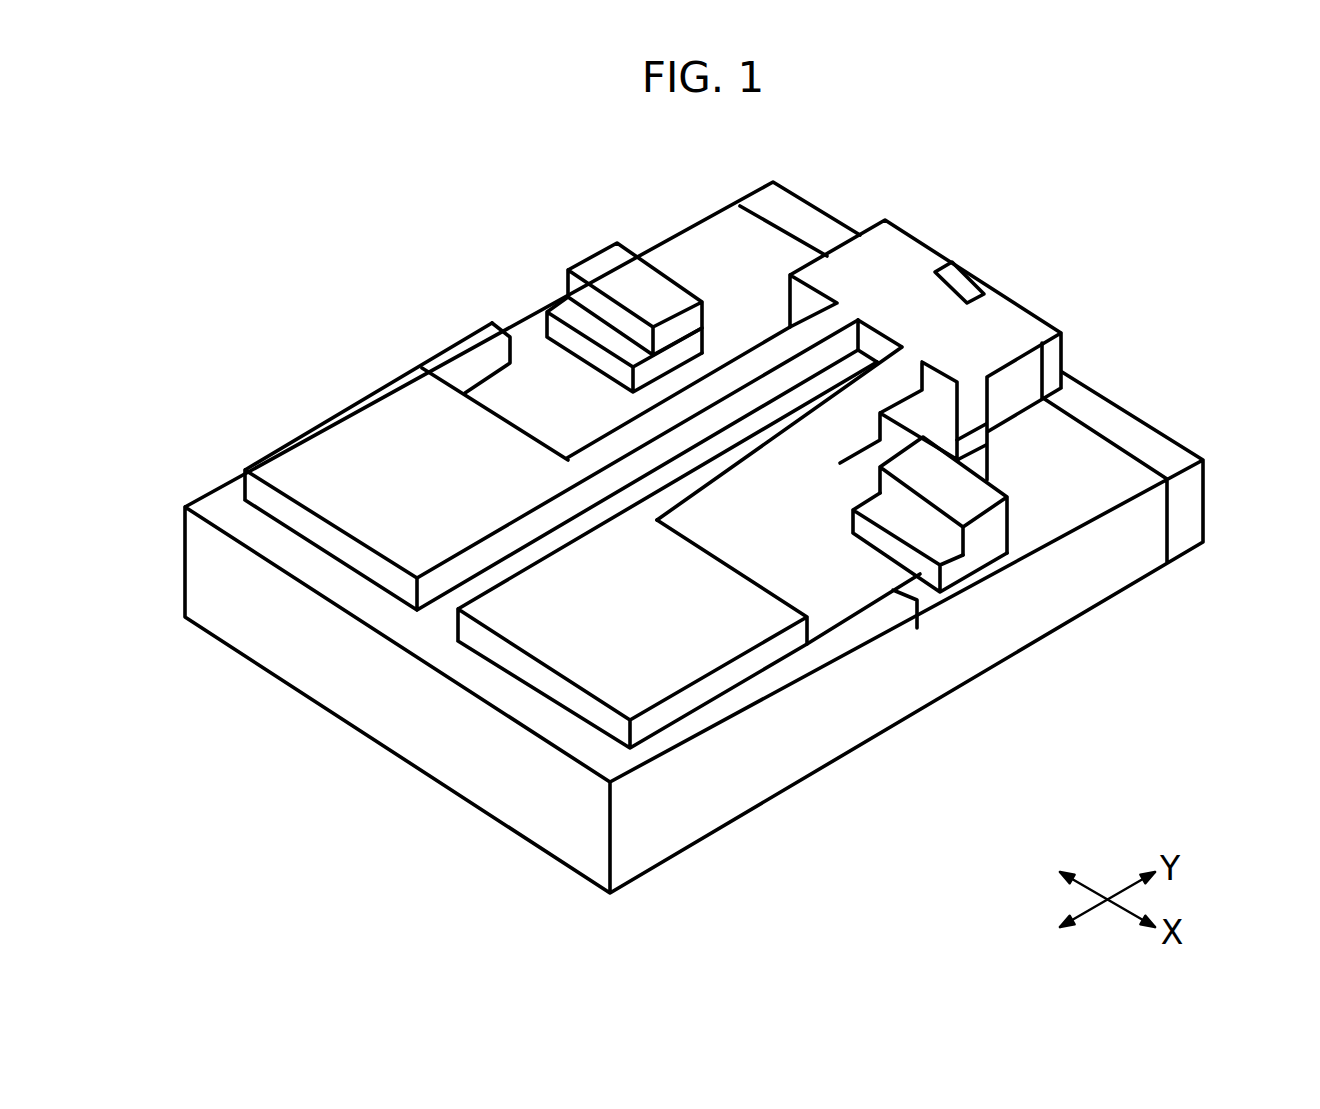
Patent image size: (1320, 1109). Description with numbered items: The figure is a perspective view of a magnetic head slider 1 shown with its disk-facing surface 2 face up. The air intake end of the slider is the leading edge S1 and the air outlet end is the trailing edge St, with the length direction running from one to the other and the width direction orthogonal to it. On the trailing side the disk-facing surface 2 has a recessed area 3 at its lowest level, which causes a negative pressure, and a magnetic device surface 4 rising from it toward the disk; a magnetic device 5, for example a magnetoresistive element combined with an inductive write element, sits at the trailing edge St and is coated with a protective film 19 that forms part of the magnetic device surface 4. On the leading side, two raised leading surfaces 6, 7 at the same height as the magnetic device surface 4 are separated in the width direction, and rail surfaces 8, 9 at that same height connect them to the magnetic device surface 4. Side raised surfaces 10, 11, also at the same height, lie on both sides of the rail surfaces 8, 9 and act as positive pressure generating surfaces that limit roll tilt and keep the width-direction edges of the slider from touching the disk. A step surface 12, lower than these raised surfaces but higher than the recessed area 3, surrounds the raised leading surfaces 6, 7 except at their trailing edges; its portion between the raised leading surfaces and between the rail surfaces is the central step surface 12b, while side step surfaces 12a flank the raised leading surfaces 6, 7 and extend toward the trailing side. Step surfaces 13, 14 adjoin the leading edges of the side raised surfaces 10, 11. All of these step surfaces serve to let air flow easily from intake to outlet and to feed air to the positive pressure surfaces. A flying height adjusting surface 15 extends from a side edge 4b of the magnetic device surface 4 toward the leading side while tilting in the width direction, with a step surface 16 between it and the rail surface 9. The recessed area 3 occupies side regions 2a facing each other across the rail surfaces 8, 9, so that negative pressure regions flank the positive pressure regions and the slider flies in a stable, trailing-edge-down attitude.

The magnetic head slider 1 is at (1133, 600).
The disk-facing surface 2 is at (693, 268).
The side region 2a is at (715, 363).
The recessed area 3 is at (1062, 518).
The magnetic device surface 4 is at (1037, 328).
The side edge of magnetic device surface 4b is at (1013, 363).
The magnetic device 5 is at (955, 270).
The raised leading surface 6 is at (333, 447).
The raised leading surface 7 is at (667, 675).
The rail surface 8 is at (603, 453).
The rail surface 9 is at (720, 468).
The side raised surface 10 is at (603, 263).
The side raised surface 11 is at (975, 502).
The step surface 12 is at (442, 640).
The side step surface 12a is at (468, 352).
The central step surface 12b is at (490, 578).
The step surface 13 is at (565, 310).
The step surface 14 is at (940, 545).
The flying height adjusting surface 15 is at (1057, 440).
The step surface 16 is at (927, 410).
The protective film 19 is at (1150, 433).
The leading edge S1 is at (437, 742).
The trailing edge St is at (1123, 402).